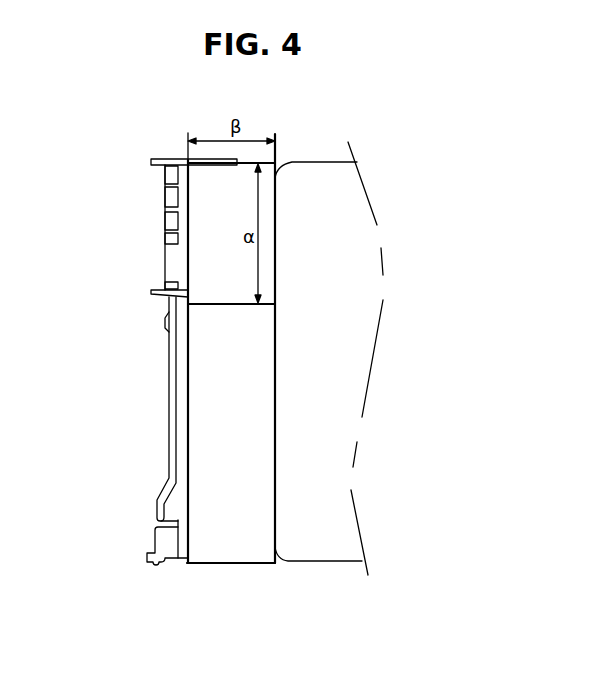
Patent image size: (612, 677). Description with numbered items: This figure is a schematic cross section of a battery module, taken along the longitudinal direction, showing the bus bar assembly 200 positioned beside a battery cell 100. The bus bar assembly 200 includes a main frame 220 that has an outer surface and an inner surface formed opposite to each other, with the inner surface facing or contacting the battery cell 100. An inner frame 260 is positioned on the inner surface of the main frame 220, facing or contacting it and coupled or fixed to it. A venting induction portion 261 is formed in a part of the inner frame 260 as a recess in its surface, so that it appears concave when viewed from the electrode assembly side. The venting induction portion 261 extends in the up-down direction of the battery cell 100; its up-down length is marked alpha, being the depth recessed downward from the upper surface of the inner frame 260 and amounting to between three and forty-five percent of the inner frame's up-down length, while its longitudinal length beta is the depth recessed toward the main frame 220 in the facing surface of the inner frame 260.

The battery cell 100 is at (330, 503).
The bus bar assembly 200 is at (143, 438).
The main frame 220 is at (165, 535).
The inner frame 260 is at (237, 507).
The venting induction portion 261 is at (212, 247).